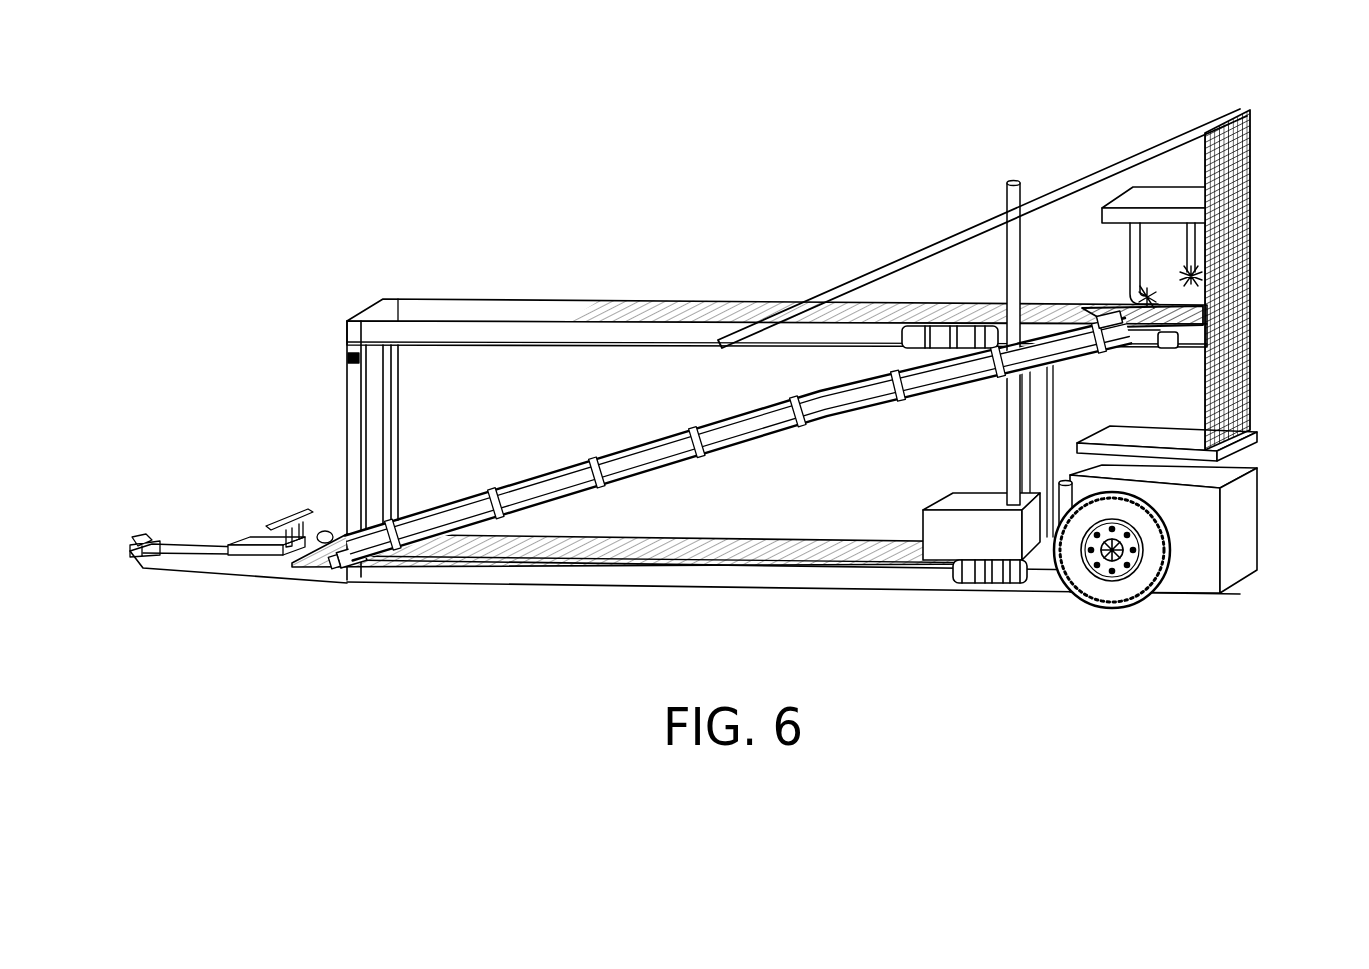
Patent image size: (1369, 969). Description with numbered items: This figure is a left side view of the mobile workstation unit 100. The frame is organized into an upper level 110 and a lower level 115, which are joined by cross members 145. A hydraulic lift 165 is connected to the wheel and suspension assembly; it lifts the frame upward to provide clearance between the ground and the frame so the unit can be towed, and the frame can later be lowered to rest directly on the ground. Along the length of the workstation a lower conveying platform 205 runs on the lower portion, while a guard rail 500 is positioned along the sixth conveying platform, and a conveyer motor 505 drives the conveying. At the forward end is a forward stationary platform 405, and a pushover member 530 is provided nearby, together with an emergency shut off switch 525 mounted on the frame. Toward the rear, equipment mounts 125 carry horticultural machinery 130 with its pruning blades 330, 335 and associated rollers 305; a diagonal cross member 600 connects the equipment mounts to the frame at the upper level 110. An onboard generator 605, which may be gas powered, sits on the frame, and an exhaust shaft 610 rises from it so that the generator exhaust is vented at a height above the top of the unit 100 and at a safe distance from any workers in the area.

The unit 100 is at (248, 112).
The upper level 110 is at (456, 300).
The lower level 115 is at (432, 590).
The equipment mounts 125 is at (1206, 283).
The horticultural machinery 130 is at (1166, 197).
The cross members 145 is at (392, 418).
The hydraulic lift 165 is at (1063, 502).
The lower conveying platform 205 is at (636, 545).
The rollers 305 is at (1251, 336).
The pruning blade 330 is at (1130, 294).
The pruning blade 335 is at (1185, 268).
The forward stationary platform 405 is at (258, 537).
The guard rail 500 is at (640, 445).
The conveyer motor 505 is at (972, 584).
The emergency shut off switch 525 is at (347, 358).
The pushover member 530 is at (300, 514).
The diagonal cross member 600 is at (1085, 175).
The onboard generator 605 is at (926, 528).
The exhaust shaft 610 is at (1008, 195).